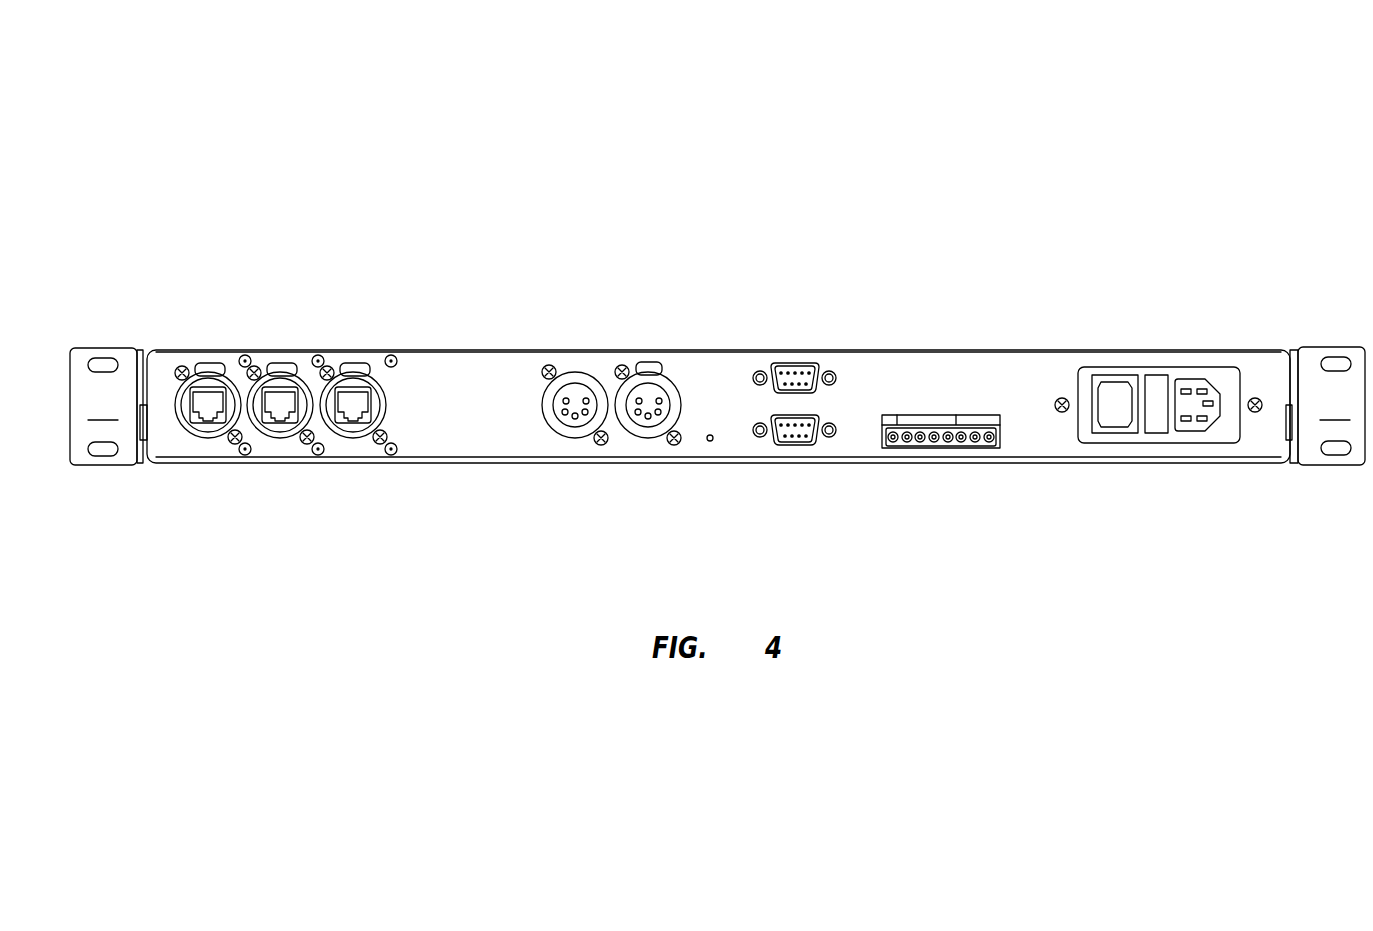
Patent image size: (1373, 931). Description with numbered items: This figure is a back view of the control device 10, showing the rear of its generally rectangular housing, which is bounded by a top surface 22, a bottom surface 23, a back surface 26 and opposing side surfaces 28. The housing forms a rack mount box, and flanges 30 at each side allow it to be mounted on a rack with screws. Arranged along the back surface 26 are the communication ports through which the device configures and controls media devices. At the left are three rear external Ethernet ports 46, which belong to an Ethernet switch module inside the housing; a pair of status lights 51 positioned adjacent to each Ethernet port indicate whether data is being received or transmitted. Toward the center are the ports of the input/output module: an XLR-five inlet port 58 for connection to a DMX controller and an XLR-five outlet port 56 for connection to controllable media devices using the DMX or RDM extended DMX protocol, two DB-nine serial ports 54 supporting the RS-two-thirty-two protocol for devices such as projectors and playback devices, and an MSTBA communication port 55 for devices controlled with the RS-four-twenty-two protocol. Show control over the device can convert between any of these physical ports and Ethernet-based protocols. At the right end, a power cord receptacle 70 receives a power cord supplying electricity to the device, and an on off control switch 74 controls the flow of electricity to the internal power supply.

The control device 10 is at (1232, 119).
The top surface 22 is at (893, 349).
The bottom surface 23 is at (1045, 465).
The back surface 26 is at (433, 365).
The side surfaces 28 is at (146, 452).
The flanges 30 is at (719, 404).
The rear external Ethernet ports 46 is at (208, 395).
The status lights 51 is at (246, 355).
The serial ports 54 is at (796, 416).
The MSTBA communication port 55 is at (940, 449).
The XLR-5 outlet port 56 is at (648, 397).
The XLR-5 inlet port 58 is at (575, 397).
The power cord receptacle 70 is at (1202, 380).
The on off control switch 74 is at (1115, 380).